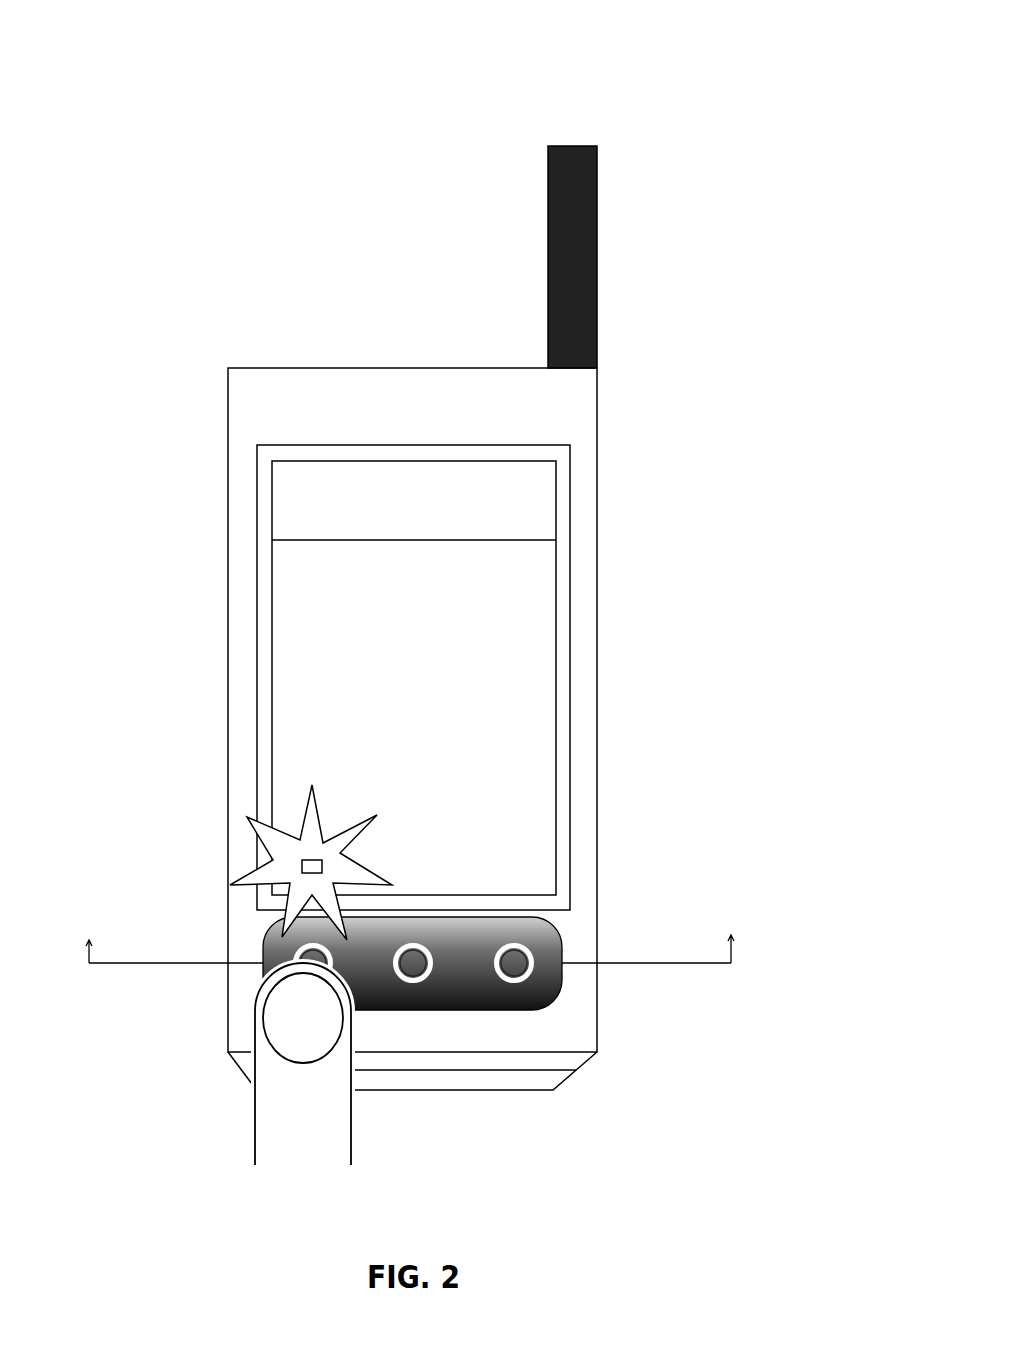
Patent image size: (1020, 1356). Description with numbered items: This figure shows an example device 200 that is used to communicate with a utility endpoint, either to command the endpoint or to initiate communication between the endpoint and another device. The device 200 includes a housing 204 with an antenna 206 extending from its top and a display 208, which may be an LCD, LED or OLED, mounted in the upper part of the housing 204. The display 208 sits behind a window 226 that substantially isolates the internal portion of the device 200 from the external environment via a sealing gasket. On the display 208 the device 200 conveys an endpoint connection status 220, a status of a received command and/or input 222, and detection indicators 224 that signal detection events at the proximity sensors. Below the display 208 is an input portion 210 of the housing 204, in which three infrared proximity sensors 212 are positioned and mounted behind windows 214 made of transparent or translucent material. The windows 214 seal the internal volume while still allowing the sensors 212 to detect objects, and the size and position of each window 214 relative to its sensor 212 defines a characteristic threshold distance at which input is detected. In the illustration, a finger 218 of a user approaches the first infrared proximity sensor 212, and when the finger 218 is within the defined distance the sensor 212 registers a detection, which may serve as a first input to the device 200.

The device 200 is at (660, 51).
The housing 204 is at (598, 668).
The antenna 206 is at (598, 257).
The display 208 is at (535, 460).
The input portion 210 is at (537, 1010).
The infrared proximity sensor 212 is at (299, 952).
The window 214 is at (313, 945).
The finger 218 is at (352, 1133).
The endpoint connection status 220 is at (292, 493).
The status of a received command and/or input 222 is at (325, 660).
The detection indicator 224 is at (303, 857).
The window 226 is at (570, 595).